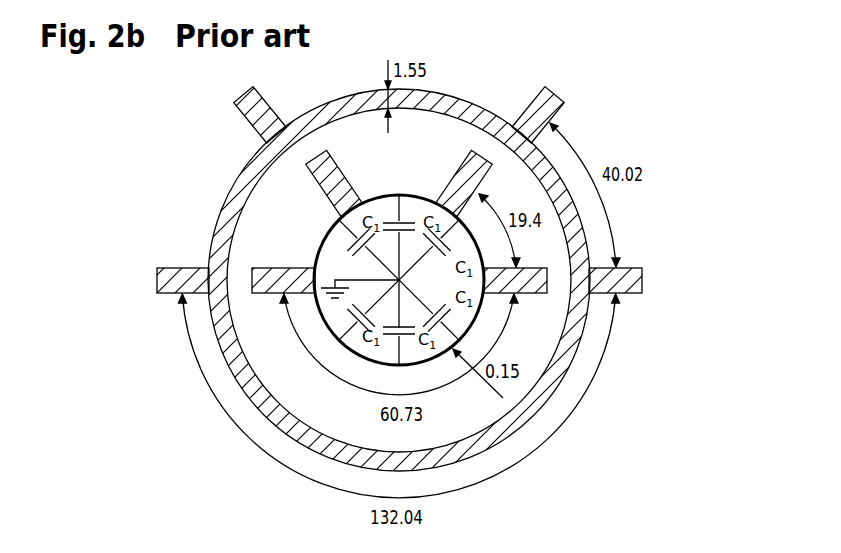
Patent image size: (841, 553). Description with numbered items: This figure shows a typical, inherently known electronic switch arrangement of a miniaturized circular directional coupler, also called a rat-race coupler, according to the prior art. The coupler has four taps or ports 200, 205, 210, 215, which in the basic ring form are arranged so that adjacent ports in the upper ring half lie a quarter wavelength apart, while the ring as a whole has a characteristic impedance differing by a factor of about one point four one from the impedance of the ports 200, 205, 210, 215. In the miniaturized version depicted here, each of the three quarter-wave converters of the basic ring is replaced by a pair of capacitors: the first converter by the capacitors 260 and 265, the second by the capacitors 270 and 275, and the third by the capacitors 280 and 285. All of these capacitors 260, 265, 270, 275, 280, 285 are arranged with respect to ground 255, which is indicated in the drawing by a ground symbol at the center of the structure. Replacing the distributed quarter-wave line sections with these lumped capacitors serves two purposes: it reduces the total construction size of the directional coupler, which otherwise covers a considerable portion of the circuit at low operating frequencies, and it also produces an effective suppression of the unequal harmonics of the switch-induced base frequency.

The port 200 is at (252, 88).
The port 205 is at (558, 96).
The port 210 is at (157, 280).
The port 215 is at (642, 280).
The ground 255 is at (338, 278).
The capacitor 260 is at (416, 224).
The capacitor 265 is at (392, 342).
The capacitor 270 is at (357, 236).
The capacitor 275 is at (450, 303).
The capacitor 280 is at (356, 320).
The capacitor 285 is at (445, 224).